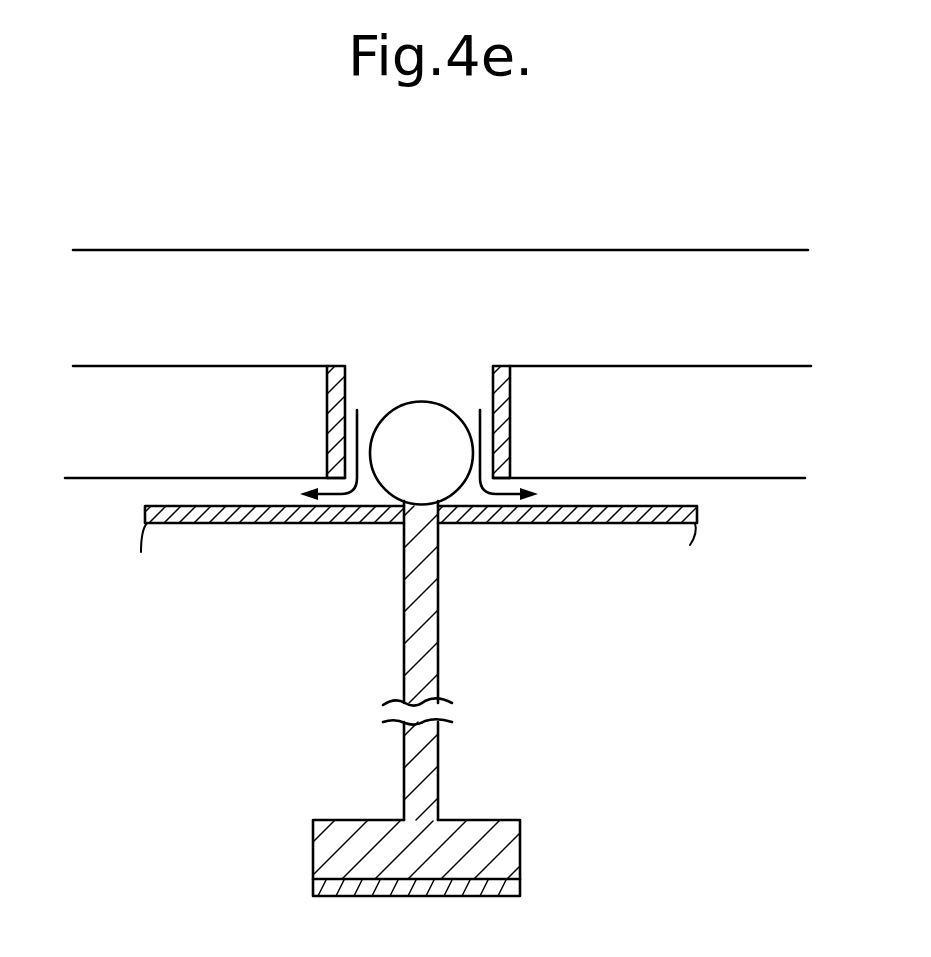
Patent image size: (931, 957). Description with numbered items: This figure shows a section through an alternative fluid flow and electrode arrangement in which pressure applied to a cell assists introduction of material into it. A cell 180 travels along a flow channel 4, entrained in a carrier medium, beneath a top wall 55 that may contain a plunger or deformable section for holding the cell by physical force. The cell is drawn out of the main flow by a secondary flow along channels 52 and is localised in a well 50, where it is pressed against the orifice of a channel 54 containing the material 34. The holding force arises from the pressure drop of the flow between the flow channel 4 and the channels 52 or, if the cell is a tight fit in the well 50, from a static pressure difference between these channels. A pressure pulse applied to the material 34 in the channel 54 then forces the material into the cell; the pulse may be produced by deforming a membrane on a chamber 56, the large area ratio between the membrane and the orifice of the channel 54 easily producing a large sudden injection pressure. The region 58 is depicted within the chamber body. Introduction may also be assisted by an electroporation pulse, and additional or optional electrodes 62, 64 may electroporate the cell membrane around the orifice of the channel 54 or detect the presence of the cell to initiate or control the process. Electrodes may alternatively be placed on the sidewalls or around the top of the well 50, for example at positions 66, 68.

The flow channel 4 is at (141, 287).
The top wall 55 is at (421, 236).
The electrode position 66 is at (327, 397).
The electrode position 68 is at (510, 385).
The channels 52 is at (203, 492).
The well 50 is at (382, 387).
The cell 180 is at (435, 405).
The electrode 62 is at (257, 525).
The electrode 64 is at (605, 525).
The material 34 is at (422, 622).
The channel 54 is at (405, 582).
The base block 58 is at (390, 843).
The chamber 56 is at (547, 822).